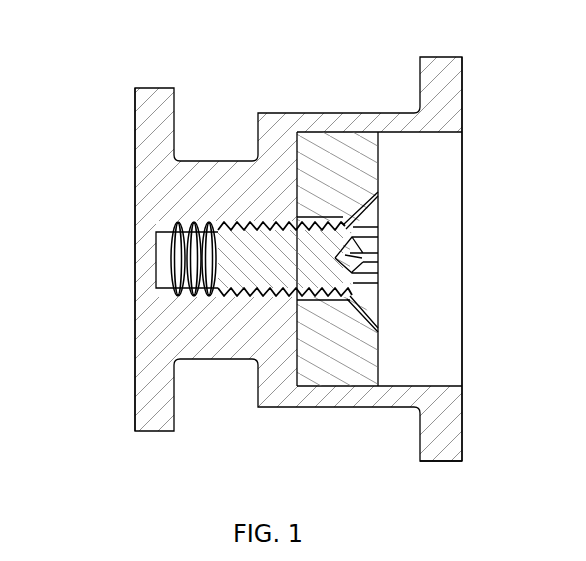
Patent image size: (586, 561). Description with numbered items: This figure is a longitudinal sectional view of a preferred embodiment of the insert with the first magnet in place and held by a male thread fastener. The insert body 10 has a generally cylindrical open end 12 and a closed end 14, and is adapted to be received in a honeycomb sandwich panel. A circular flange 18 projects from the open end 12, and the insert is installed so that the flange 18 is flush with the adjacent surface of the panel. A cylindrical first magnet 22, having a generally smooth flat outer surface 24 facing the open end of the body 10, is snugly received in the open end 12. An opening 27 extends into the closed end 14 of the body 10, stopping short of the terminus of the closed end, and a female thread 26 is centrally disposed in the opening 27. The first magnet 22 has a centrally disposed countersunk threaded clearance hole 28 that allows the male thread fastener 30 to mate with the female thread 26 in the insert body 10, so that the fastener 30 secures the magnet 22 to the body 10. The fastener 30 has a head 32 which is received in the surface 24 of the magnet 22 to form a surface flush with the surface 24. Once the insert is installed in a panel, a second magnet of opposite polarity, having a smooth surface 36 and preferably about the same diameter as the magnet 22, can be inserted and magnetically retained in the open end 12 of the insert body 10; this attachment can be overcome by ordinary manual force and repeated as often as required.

The insert body 10 is at (255, 329).
The open end 12 is at (420, 323).
The closed end 14 is at (135, 269).
The circular flange 18 is at (447, 443).
The first magnet 22 is at (342, 347).
The outer surface 24 is at (381, 172).
The female thread 26 is at (193, 225).
The opening 27 is at (162, 268).
The countersunk threaded clearance hole 28 is at (326, 217).
The male thread fastener 30 is at (277, 268).
The head 32 is at (362, 258).
The smooth surface 36 is at (585, 340).